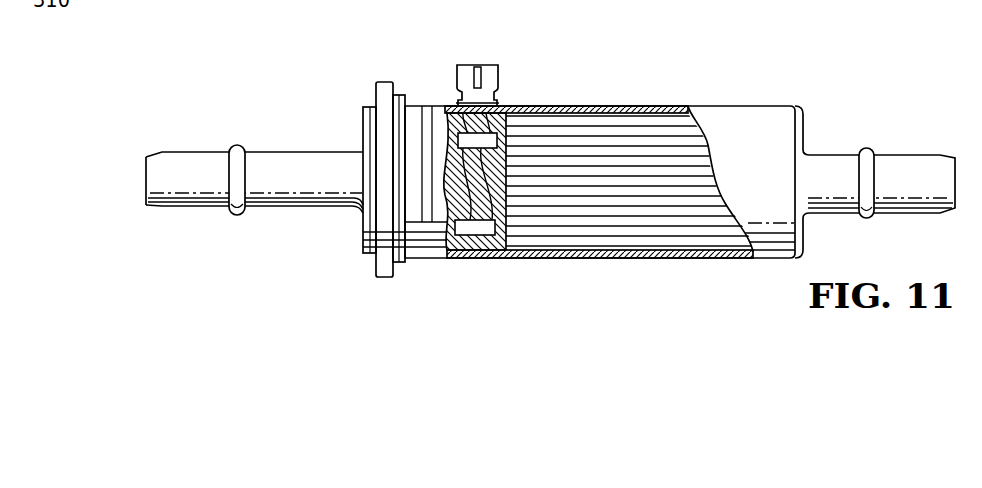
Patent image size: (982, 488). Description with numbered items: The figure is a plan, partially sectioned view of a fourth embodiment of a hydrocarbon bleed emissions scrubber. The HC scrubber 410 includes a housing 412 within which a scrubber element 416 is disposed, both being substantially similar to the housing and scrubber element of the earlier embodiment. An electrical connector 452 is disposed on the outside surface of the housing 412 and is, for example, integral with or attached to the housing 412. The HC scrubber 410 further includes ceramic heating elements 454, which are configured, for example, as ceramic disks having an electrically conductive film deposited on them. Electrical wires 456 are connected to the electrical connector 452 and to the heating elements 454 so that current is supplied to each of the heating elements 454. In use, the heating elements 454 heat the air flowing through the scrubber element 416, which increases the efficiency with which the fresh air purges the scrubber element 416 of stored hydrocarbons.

The HC scrubber 410 is at (636, 53).
The housing 412 is at (762, 113).
The scrubber element 416 is at (613, 217).
The electrical connector 452 is at (470, 67).
The ceramic heating elements 454 is at (482, 232).
The electrical wires 456 is at (458, 133).